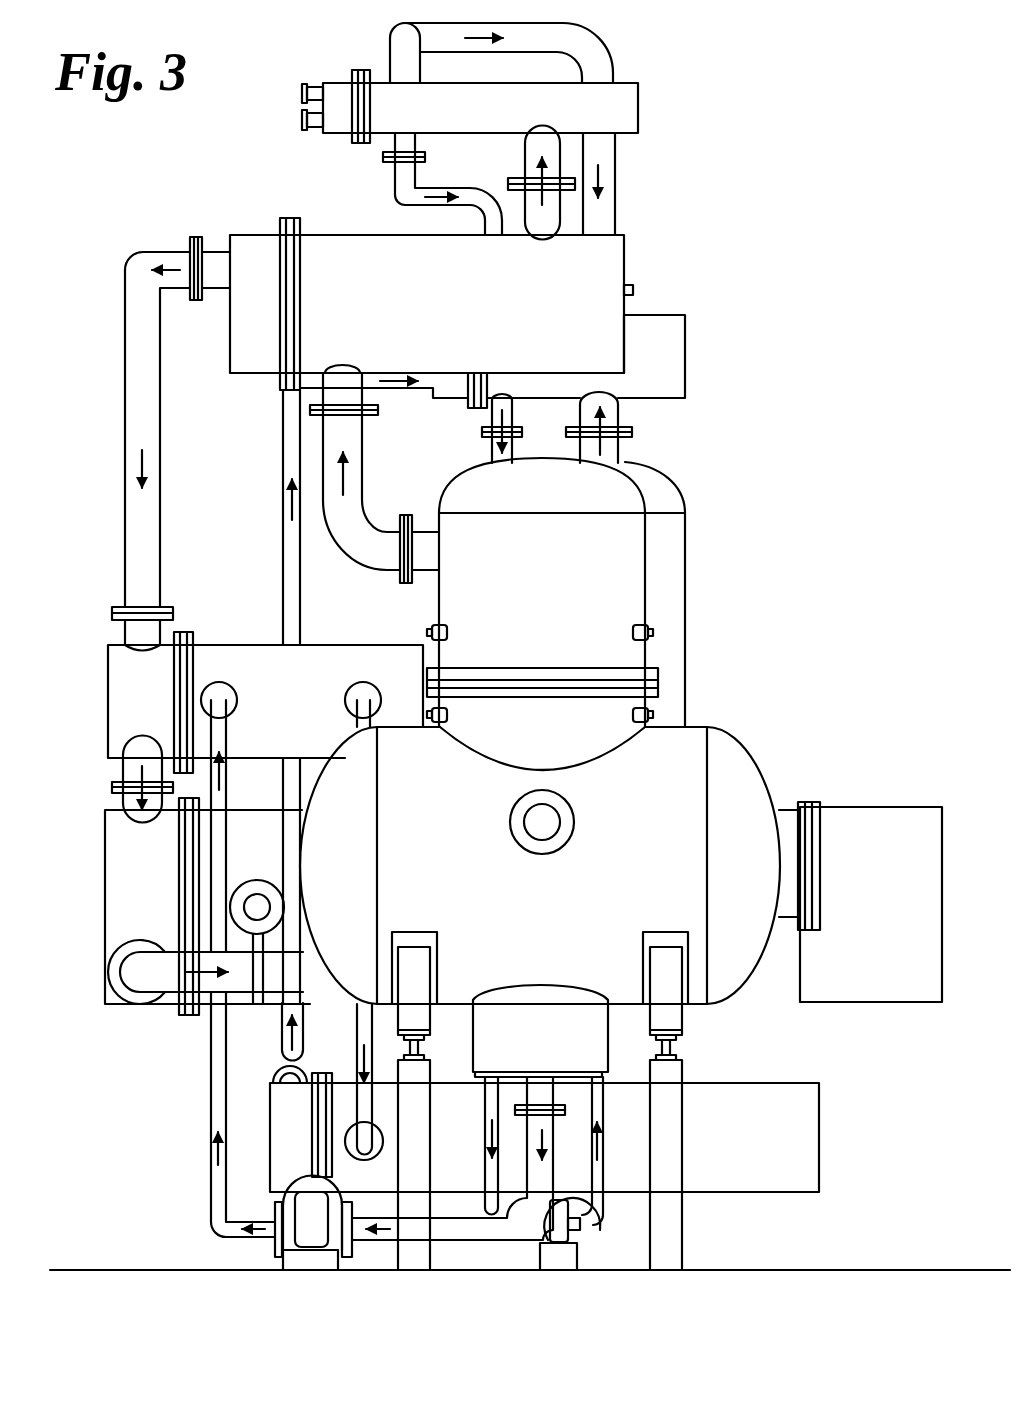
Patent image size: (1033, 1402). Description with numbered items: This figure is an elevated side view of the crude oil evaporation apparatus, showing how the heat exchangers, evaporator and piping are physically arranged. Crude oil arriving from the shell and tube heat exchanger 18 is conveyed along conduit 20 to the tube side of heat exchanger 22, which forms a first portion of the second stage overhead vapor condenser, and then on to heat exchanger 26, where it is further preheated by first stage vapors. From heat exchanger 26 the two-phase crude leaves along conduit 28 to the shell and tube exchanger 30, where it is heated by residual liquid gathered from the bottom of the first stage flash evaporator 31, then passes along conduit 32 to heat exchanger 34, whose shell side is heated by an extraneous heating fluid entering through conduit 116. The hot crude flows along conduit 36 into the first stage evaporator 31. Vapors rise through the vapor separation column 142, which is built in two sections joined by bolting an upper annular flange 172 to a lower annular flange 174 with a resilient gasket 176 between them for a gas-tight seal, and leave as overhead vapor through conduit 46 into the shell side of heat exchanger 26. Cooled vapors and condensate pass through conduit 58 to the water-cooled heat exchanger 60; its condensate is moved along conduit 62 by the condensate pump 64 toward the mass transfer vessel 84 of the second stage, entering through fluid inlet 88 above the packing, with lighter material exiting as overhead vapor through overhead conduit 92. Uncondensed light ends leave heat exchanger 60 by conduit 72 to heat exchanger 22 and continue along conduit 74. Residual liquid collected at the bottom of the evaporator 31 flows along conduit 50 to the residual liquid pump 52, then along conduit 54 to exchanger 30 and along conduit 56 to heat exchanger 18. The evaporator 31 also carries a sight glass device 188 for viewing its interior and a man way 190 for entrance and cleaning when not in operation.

The shell and tube heat exchanger 18 is at (822, 1138).
The conduit 20 is at (281, 536).
The shell and tube heat exchanger 22 is at (690, 356).
The shell and tube heat exchanger 26 is at (262, 378).
The conduit 28 is at (124, 474).
The shell and tube exchanger 30 is at (106, 687).
The first stage flash evaporator 31 is at (762, 748).
The conduit 32 is at (122, 772).
The shell and tube heat exchanger 34 is at (103, 889).
The conduit 36 is at (144, 984).
The conduit 46 is at (352, 545).
The conduit 50 is at (460, 1236).
The residual liquid pump 52 is at (276, 1248).
The conduit 54 is at (209, 1106).
The conduit 56 is at (364, 698).
The conduit 58 is at (522, 156).
The water-cooled heat exchanger 60 is at (646, 100).
The conduit 62 is at (394, 182).
The condensate pump 64 is at (557, 1262).
The conduit 72 is at (612, 48).
The conduit 74 is at (514, 416).
The mass transfer vessel 84 is at (688, 584).
The fluid inlet 88 is at (591, 1200).
The overhead conduit 92 is at (620, 416).
The conduit 116 is at (258, 882).
The vapor separation column 142 is at (652, 540).
The upper annular flange 172 is at (655, 667).
The lower annular flange 174 is at (652, 698).
The resilient gasket 176 is at (660, 684).
The sight glass device 188 is at (576, 822).
The man way 190 is at (818, 822).